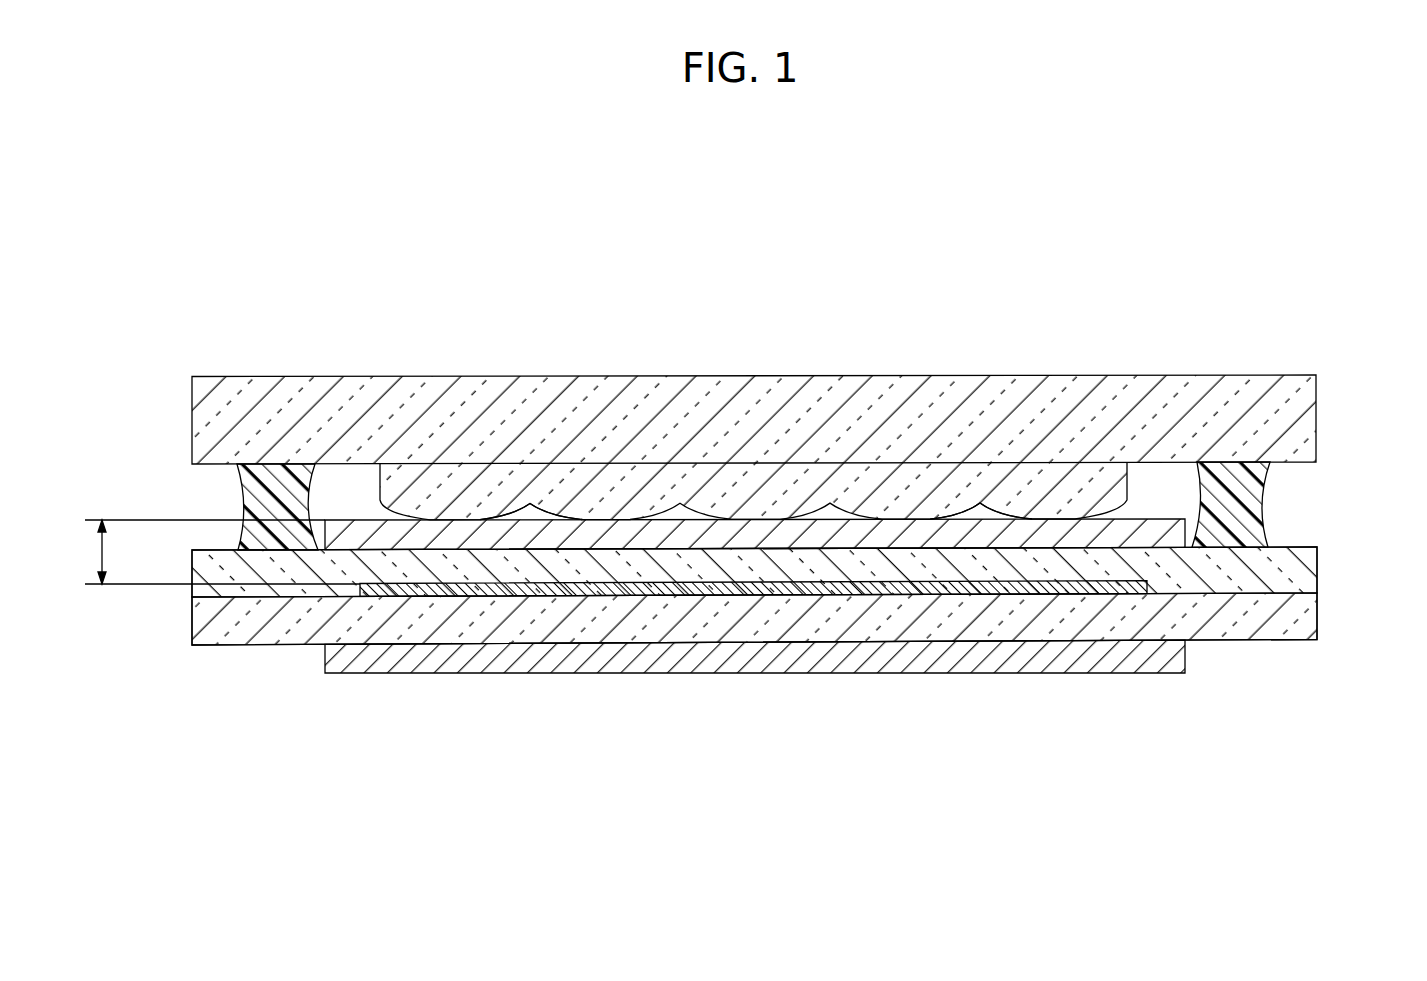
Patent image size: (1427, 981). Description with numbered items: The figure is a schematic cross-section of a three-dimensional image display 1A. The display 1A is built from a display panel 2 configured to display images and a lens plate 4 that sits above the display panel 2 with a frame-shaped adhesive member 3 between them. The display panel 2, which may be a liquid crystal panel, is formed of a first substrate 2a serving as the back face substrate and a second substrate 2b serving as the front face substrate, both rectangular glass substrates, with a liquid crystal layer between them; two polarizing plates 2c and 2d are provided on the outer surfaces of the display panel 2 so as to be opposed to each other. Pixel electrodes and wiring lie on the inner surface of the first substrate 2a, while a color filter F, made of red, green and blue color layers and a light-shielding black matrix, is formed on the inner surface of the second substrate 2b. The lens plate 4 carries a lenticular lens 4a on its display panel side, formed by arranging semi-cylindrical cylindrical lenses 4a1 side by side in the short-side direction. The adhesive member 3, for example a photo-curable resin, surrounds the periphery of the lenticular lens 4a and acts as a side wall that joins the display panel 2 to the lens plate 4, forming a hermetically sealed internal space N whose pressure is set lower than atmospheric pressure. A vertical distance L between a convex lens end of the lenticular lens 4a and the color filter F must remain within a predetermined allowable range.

The three-dimensional image display 1A is at (1272, 240).
The display panel 2 is at (1318, 556).
The first substrate 2a is at (1297, 617).
The second substrate 2b is at (1297, 570).
The polarizing plate 2c is at (430, 535).
The polarizing plate 2d is at (593, 668).
The adhesive member 3 is at (245, 512).
The lens plate 4 is at (1297, 400).
The lenticular lens 4a is at (1130, 482).
The cylindrical lens 4a1 is at (1050, 513).
The color filter F is at (487, 595).
The internal space N is at (347, 493).
The vertical distance L is at (218, 552).